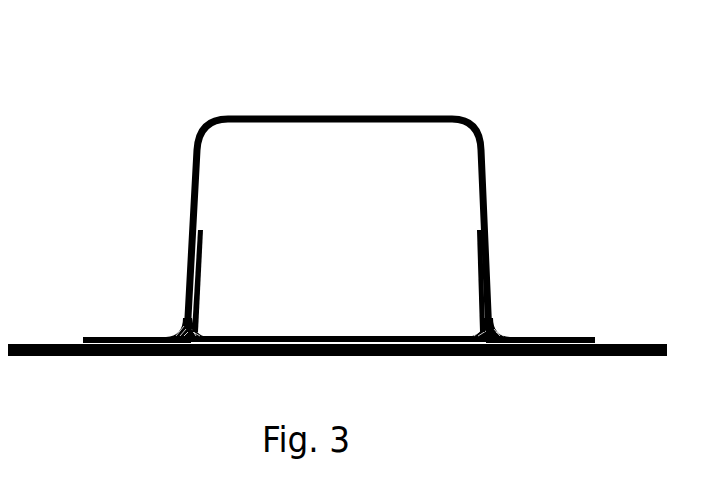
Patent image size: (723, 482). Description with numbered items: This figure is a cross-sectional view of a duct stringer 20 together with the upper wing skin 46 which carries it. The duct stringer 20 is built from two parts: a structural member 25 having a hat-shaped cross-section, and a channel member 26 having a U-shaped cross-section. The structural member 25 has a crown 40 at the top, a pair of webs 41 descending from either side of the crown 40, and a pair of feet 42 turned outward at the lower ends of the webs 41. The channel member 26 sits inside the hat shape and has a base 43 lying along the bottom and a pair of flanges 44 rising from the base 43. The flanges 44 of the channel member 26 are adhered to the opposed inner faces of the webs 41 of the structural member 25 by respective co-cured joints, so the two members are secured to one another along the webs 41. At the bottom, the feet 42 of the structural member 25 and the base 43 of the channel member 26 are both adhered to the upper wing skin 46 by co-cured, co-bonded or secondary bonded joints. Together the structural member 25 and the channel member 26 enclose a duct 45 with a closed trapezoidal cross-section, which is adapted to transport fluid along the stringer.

The duct stringer 20 is at (117, 138).
The structural member 25 is at (344, 177).
The channel member 26 is at (389, 323).
The crown 40 is at (272, 116).
The webs 41 is at (198, 162).
The feet 42 is at (122, 337).
The base 43 is at (357, 335).
The flanges 44 is at (197, 255).
The duct 45 is at (323, 191).
The upper wing skin 46 is at (642, 355).